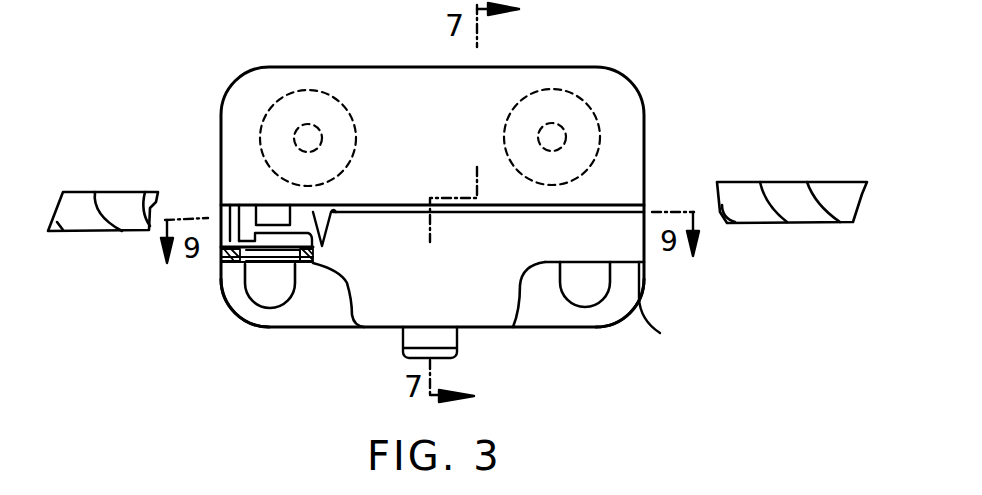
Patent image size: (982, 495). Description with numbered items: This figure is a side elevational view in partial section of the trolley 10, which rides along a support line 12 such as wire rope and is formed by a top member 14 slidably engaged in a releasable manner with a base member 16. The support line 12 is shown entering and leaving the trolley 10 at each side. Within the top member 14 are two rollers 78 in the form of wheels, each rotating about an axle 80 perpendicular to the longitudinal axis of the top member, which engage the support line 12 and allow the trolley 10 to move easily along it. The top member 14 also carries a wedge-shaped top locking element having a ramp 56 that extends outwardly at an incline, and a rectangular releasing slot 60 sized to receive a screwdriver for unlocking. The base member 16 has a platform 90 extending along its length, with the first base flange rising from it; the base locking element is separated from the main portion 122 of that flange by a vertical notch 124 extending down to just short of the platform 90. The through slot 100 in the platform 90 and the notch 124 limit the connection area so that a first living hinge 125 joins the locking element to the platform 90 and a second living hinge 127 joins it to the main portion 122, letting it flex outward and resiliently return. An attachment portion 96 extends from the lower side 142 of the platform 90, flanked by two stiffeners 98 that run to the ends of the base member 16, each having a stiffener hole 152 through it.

The trolley 10 is at (201, 91).
The support line 12 is at (829, 172).
The top member 14 is at (656, 110).
The base member 16 is at (657, 262).
The ramp 56 is at (267, 204).
The releasing slot 60 is at (233, 205).
The rollers 78 is at (301, 91).
The axle 80 is at (315, 127).
The platform 90 is at (221, 252).
The attachment portion 96 is at (526, 330).
The stiffeners 98 is at (260, 327).
The through slot 100 is at (243, 295).
The main portion 122 is at (600, 230).
The notch 124 is at (328, 226).
The first living hinge 125 is at (228, 268).
The second living hinge 127 is at (312, 265).
The lower side 142 is at (672, 305).
The stiffener hole 152 is at (284, 309).